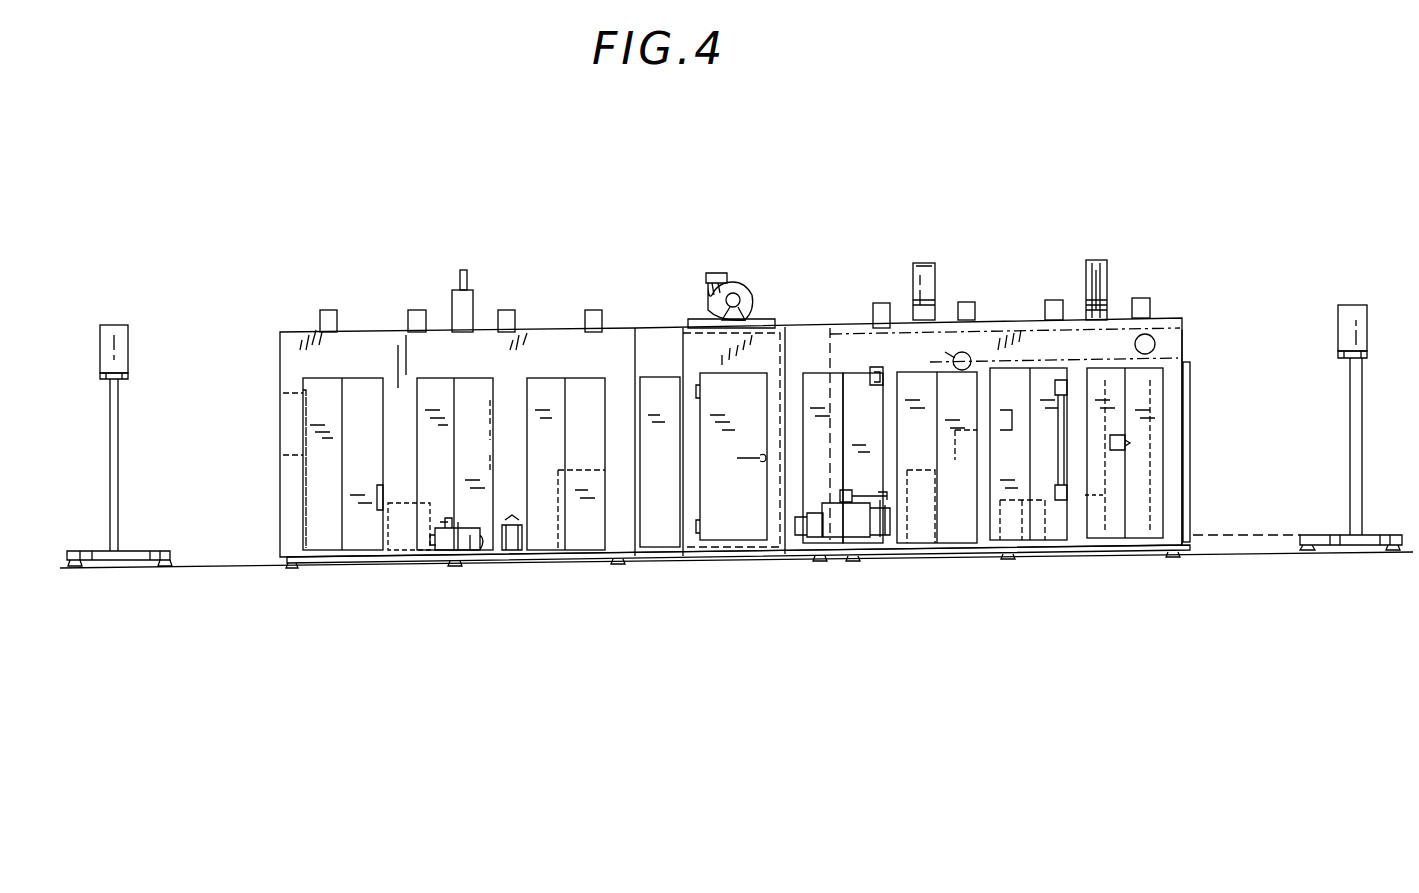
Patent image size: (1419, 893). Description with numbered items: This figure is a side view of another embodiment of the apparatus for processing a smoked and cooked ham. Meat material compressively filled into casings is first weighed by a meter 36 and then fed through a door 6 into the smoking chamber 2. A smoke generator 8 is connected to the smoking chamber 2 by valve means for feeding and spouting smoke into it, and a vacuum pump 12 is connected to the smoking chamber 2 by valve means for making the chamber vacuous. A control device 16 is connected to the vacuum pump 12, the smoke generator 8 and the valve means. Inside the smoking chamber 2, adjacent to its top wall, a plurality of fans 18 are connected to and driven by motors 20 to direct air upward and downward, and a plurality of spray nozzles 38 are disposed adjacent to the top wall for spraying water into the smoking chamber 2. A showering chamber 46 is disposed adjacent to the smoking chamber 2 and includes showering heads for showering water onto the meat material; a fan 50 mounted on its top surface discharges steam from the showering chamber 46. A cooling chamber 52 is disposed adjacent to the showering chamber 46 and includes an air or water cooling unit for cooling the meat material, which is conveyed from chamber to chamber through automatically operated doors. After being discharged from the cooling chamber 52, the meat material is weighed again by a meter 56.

The smoking chamber 2 is at (790, 411).
The door 6 is at (1190, 393).
The smoke generator 8 is at (967, 522).
The vacuum pump 12 is at (800, 535).
The control device 16 is at (1177, 432).
The fans 18 is at (950, 332).
The motors 20 is at (965, 302).
The meter 36 is at (1352, 305).
The spray nozzles 38 is at (925, 340).
The showering chamber 46 is at (683, 327).
The fan 50 is at (743, 290).
The cooling chamber 52 is at (550, 330).
The meter 56 is at (115, 324).